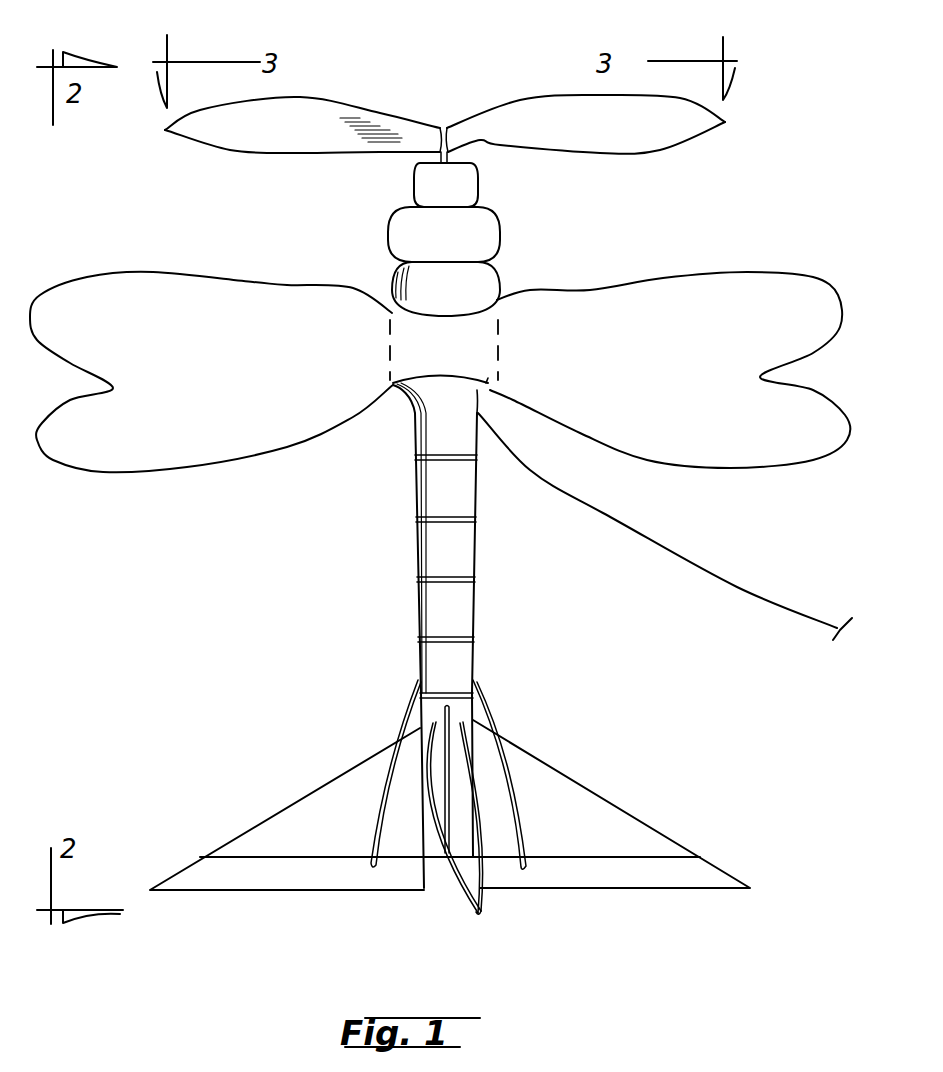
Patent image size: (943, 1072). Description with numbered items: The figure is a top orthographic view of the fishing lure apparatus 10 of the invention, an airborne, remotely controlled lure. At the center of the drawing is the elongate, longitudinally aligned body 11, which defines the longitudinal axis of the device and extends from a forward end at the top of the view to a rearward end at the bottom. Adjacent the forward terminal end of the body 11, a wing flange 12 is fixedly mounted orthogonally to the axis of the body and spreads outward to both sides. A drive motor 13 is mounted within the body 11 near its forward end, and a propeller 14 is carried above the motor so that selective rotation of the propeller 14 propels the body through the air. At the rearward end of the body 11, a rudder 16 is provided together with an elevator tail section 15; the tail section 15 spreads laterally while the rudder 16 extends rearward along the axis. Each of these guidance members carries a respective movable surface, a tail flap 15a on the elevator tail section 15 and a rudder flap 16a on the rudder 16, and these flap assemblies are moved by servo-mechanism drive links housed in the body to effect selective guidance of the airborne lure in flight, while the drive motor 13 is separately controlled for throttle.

The fishing lure apparatus 10 is at (700, 196).
The body 11 is at (462, 562).
The wing flange 12 is at (705, 292).
The drive motor 13 is at (480, 220).
The propeller 14 is at (587, 147).
The elevator tail section 15 is at (583, 807).
The tail flap 15a is at (367, 880).
The rudder 16 is at (447, 777).
The rudder flap 16a is at (477, 918).